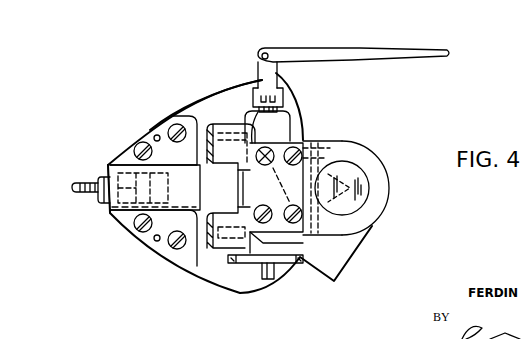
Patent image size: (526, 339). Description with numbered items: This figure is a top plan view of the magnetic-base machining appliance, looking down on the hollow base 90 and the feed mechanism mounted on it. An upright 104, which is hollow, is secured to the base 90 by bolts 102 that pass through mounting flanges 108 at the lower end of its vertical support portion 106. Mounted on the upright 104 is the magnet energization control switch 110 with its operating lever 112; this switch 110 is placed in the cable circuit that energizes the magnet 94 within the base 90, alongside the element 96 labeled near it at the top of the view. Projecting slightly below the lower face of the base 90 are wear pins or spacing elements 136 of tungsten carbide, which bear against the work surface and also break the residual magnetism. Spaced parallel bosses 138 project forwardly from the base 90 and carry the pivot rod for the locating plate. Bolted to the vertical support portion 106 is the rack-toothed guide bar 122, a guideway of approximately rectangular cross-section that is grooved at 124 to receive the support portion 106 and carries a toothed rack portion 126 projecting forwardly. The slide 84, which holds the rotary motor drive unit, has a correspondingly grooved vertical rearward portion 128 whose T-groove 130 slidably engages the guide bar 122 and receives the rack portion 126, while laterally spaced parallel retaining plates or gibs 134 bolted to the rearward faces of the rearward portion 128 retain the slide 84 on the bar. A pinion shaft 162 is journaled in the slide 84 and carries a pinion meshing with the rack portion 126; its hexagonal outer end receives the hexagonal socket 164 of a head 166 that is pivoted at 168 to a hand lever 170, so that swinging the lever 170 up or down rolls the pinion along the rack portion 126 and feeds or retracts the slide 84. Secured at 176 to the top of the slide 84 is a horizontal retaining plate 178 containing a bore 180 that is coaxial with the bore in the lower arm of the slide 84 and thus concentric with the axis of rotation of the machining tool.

The slide 84 is at (306, 122).
The hollow base 90 is at (207, 282).
The magnet 94 is at (348, 5).
The element 96 is at (382, 5).
The bolts 102 is at (173, 116).
The upright 104 is at (101, 220).
The vertical support portion 106 is at (108, 164).
The mounting flanges 108 is at (148, 133).
The magnet energization control switch 110 is at (124, 220).
The operating lever 112 is at (72, 187).
The rack-toothed guide bar 122 is at (214, 190).
The groove 124 is at (211, 171).
The toothed rack portion 126 is at (243, 145).
The vertical rearward portion 128 is at (232, 123).
The T-groove 130 is at (229, 255).
The retaining plates or gibs 134 is at (201, 104).
The wear pins or spacing elements 136 is at (303, 5).
The bosses 138 is at (336, 142).
The pinion shaft 162 is at (268, 112).
The hexagonal socket 164 is at (279, 98).
The head 166 is at (258, 72).
The pivot 168 is at (265, 52).
The hand lever 170 is at (341, 44).
The bolts 176 is at (301, 141).
The horizontal retaining plate 178 is at (364, 150).
The bore 180 is at (370, 187).